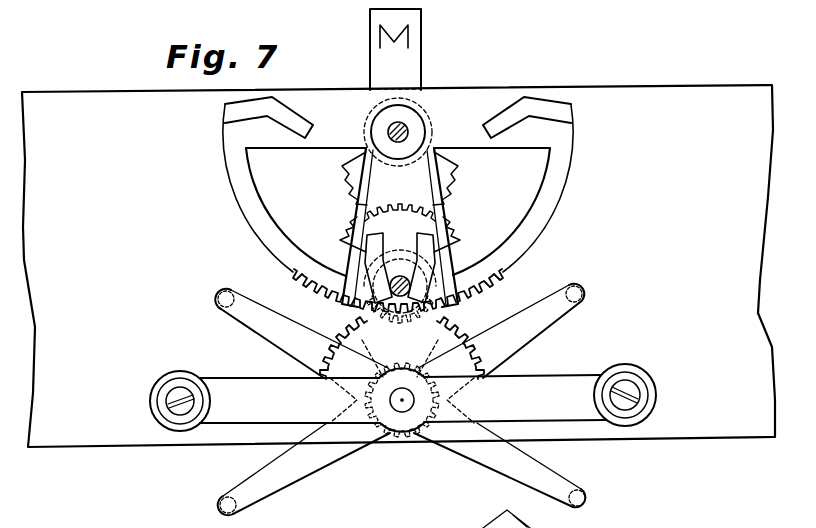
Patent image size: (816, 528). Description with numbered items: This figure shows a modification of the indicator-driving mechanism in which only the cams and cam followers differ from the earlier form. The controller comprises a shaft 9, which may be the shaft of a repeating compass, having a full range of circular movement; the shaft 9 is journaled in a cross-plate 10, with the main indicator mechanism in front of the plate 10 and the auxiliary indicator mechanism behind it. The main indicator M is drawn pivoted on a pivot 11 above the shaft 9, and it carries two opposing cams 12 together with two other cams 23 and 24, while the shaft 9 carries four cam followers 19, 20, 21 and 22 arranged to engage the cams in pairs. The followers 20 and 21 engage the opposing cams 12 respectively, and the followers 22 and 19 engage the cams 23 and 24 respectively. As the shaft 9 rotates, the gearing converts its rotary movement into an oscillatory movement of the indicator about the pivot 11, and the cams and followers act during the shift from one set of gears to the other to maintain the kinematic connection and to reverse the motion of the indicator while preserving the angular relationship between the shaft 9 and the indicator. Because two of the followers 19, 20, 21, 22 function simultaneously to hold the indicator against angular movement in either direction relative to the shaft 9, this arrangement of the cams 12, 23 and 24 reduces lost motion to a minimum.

The shaft 9 is at (402, 404).
The cross-plate 10 is at (688, 93).
The pivot of sector gear 11 is at (407, 125).
The opposing cams 12 is at (412, 246).
The cam follower 19 is at (587, 498).
The cam follower 20 is at (590, 286).
The cam follower 21 is at (221, 292).
The cam follower 22 is at (220, 500).
The cam 23 is at (264, 126).
The cam 24 is at (550, 118).